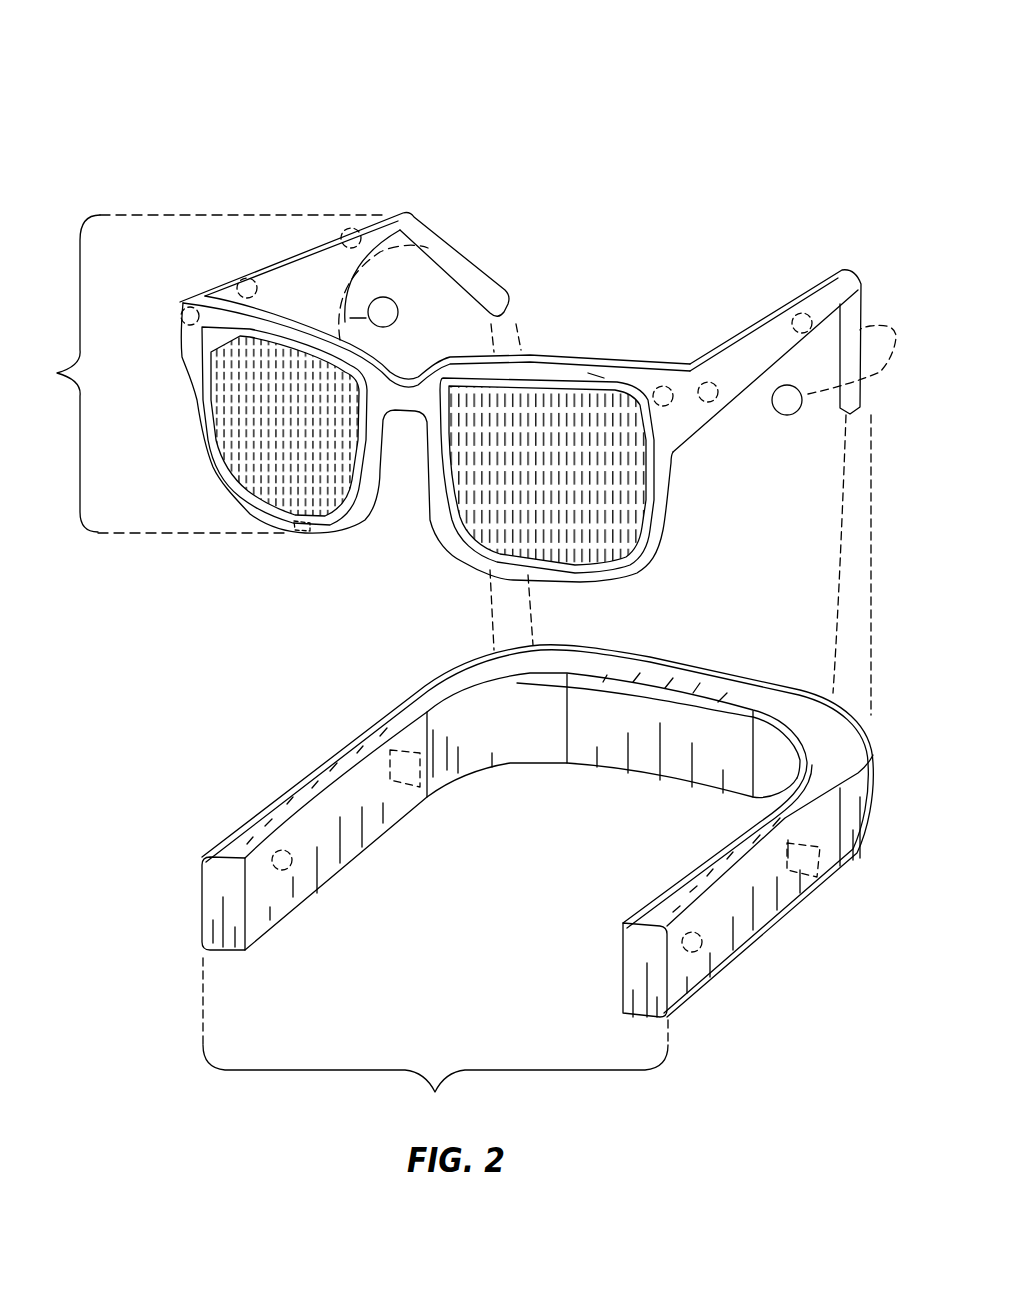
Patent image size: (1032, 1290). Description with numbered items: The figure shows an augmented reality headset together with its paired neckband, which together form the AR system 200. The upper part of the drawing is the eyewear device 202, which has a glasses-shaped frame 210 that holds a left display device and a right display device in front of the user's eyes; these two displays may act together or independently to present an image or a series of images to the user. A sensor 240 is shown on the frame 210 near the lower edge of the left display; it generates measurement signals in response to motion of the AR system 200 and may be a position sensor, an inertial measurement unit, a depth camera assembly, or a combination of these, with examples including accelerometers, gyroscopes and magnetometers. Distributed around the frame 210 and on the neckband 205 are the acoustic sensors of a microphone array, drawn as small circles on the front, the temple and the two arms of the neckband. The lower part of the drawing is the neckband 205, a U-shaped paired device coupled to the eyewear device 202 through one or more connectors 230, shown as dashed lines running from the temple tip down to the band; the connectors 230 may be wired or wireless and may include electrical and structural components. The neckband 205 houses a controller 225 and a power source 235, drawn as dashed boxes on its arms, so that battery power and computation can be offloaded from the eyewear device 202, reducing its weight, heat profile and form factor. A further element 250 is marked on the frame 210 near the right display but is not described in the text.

The AR system 200 is at (92, 94).
The eyewear device 202 is at (201, 374).
The neckband 205 is at (537, 883).
The frame 210 is at (410, 215).
The controller 225 is at (797, 868).
The connector 230 is at (858, 588).
The power source 235 is at (405, 776).
The sensor 240 is at (293, 527).
The audio transducer 250 is at (591, 370).